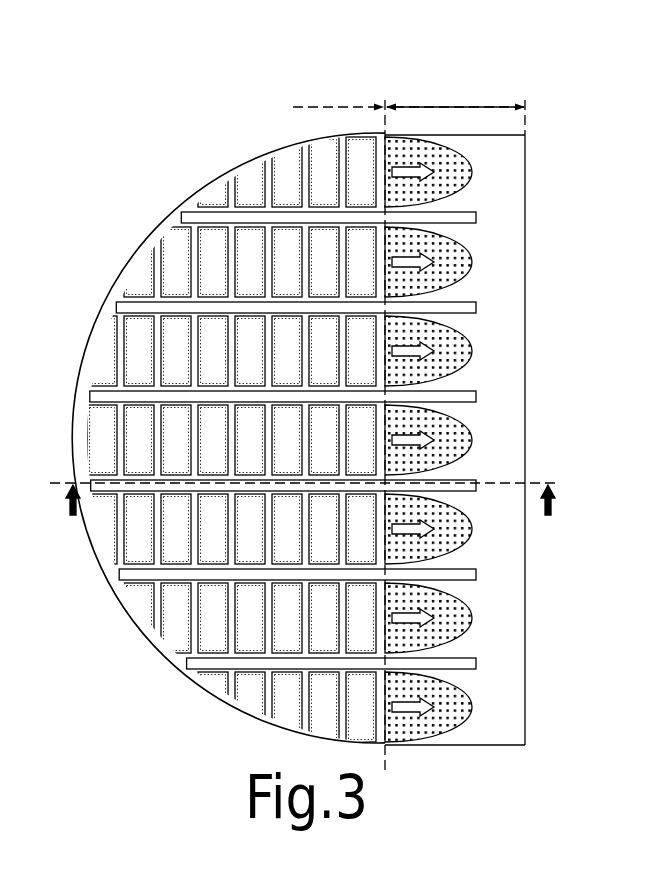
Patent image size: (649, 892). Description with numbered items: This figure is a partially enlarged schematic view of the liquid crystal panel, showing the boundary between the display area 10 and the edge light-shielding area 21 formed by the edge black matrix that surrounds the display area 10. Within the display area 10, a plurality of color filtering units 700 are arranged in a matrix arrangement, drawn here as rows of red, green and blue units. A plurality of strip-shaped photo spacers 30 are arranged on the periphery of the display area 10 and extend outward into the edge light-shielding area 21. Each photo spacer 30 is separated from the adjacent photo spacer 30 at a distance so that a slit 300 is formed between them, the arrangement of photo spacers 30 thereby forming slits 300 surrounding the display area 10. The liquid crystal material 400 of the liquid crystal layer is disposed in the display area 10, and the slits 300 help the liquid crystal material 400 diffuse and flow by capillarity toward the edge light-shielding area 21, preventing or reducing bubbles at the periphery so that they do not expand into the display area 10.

The display area 10 is at (334, 103).
The edge light-shielding area 21 is at (458, 103).
The color filtering unit 700 is at (283, 165).
The photo spacer 30 is at (465, 308).
The slit 300 is at (507, 175).
The liquid crystal material 400 is at (458, 262).